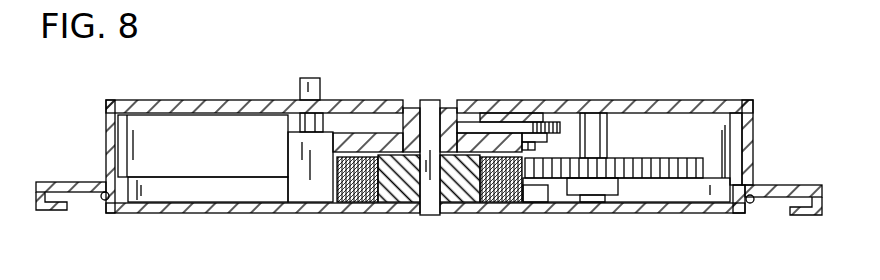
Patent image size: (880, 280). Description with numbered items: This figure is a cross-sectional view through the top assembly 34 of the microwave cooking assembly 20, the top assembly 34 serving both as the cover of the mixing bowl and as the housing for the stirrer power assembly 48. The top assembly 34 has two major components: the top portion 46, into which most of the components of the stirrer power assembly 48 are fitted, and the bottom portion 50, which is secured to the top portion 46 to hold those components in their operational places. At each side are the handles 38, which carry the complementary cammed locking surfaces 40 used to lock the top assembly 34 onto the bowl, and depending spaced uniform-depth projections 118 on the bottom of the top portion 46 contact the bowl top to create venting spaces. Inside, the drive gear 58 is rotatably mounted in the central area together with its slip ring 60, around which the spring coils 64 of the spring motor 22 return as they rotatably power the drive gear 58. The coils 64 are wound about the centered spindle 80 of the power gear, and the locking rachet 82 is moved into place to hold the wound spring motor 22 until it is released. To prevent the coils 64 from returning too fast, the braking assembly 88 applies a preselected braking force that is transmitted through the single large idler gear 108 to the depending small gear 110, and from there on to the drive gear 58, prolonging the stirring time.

The microwave cooking assembly 20 is at (175, 97).
The top assembly 34 is at (216, 97).
The top portion 46 is at (268, 97).
The handles 38 is at (60, 181).
The cammed locking surfaces 40 is at (40, 212).
The projections 118 is at (103, 201).
The locking rachet 82 is at (286, 158).
The drive gear 58 is at (385, 131).
The centered spindle 80 is at (430, 108).
The slip ring 60 is at (358, 206).
The spring coils 64 is at (343, 205).
The spring motor 22 is at (504, 206).
The braking assembly 88 is at (541, 127).
The depending small gear 110 is at (610, 139).
The single large idler gear 108 is at (645, 157).
The stirrer power assembly 48 is at (679, 151).
The bottom portion 50 is at (685, 215).